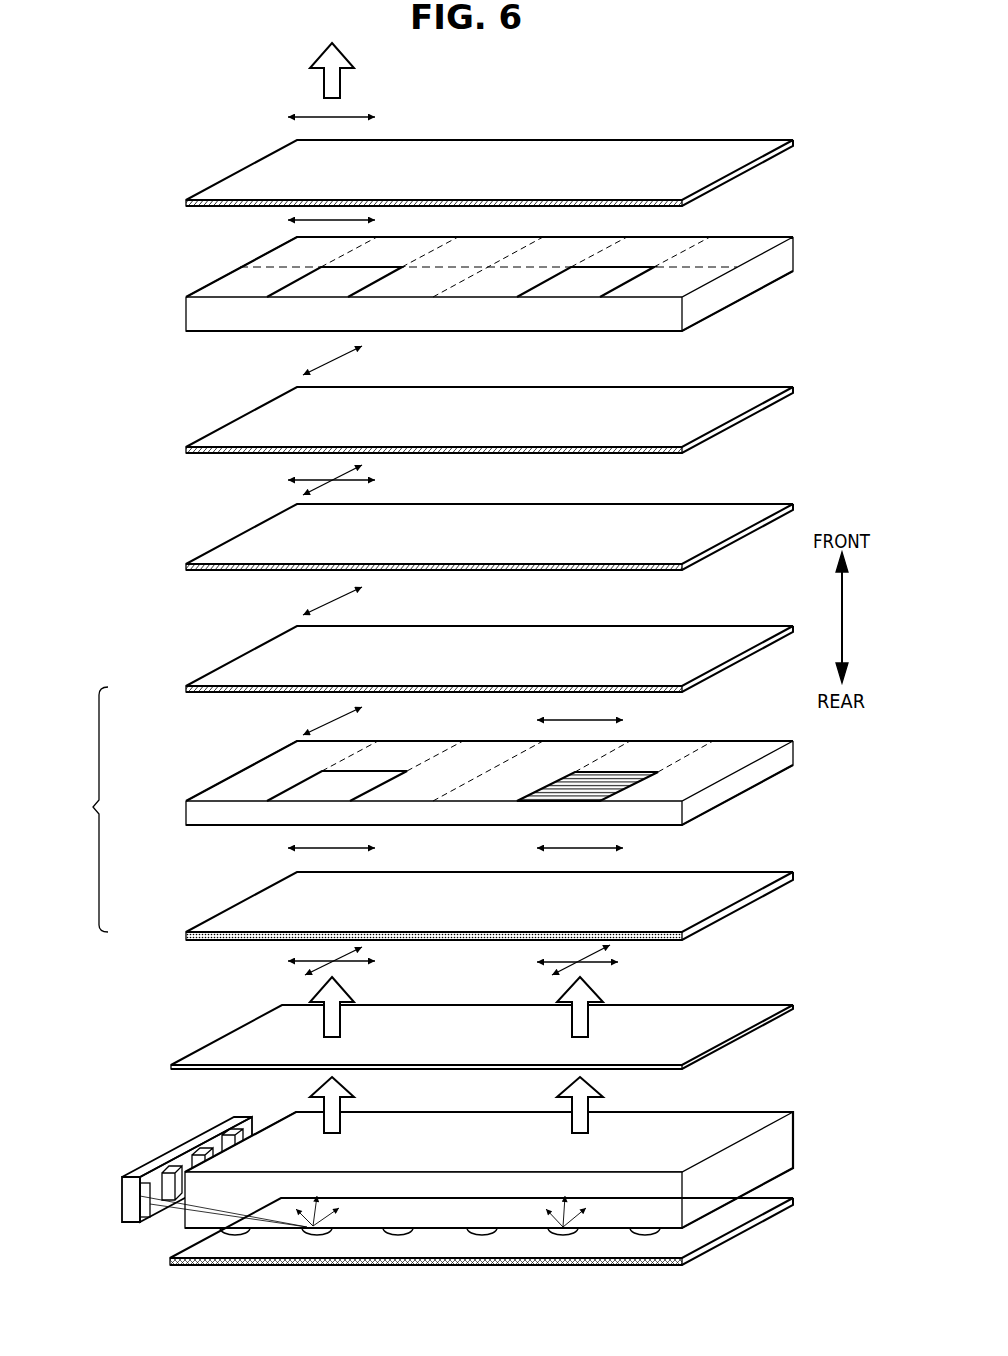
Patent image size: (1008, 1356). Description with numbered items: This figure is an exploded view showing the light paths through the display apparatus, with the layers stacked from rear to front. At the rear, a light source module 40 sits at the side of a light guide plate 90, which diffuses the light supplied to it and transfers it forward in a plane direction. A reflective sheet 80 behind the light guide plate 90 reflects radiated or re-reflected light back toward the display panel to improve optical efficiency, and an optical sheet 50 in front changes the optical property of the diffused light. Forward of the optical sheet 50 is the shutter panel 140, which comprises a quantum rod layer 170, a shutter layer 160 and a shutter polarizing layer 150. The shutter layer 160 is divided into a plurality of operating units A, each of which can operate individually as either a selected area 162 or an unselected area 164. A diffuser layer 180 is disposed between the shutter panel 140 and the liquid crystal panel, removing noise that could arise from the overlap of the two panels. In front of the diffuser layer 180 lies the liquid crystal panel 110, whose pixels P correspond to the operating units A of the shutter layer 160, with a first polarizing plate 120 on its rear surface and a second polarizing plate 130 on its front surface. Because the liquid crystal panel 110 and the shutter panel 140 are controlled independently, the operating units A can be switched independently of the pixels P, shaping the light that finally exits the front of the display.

The second polarizing plate 130 is at (186, 201).
The liquid crystal panel 110 is at (452, 281).
The pixel P is at (240, 274).
The first polarizing plate 120 is at (186, 449).
The diffuser layer 180 is at (186, 566).
The shutter panel 140 is at (81, 809).
The shutter polarizing layer 150 is at (186, 688).
The shutter layer 160 is at (452, 763).
The operating unit A is at (268, 784).
The selected area 162 is at (386, 770).
The unselected area 164 is at (641, 771).
The quantum rod layer 170 is at (186, 934).
The optical sheet 50 is at (171, 1066).
The light source module 40 is at (122, 1197).
The light guide plate 90 is at (440, 1218).
The reflective sheet 80 is at (254, 1266).